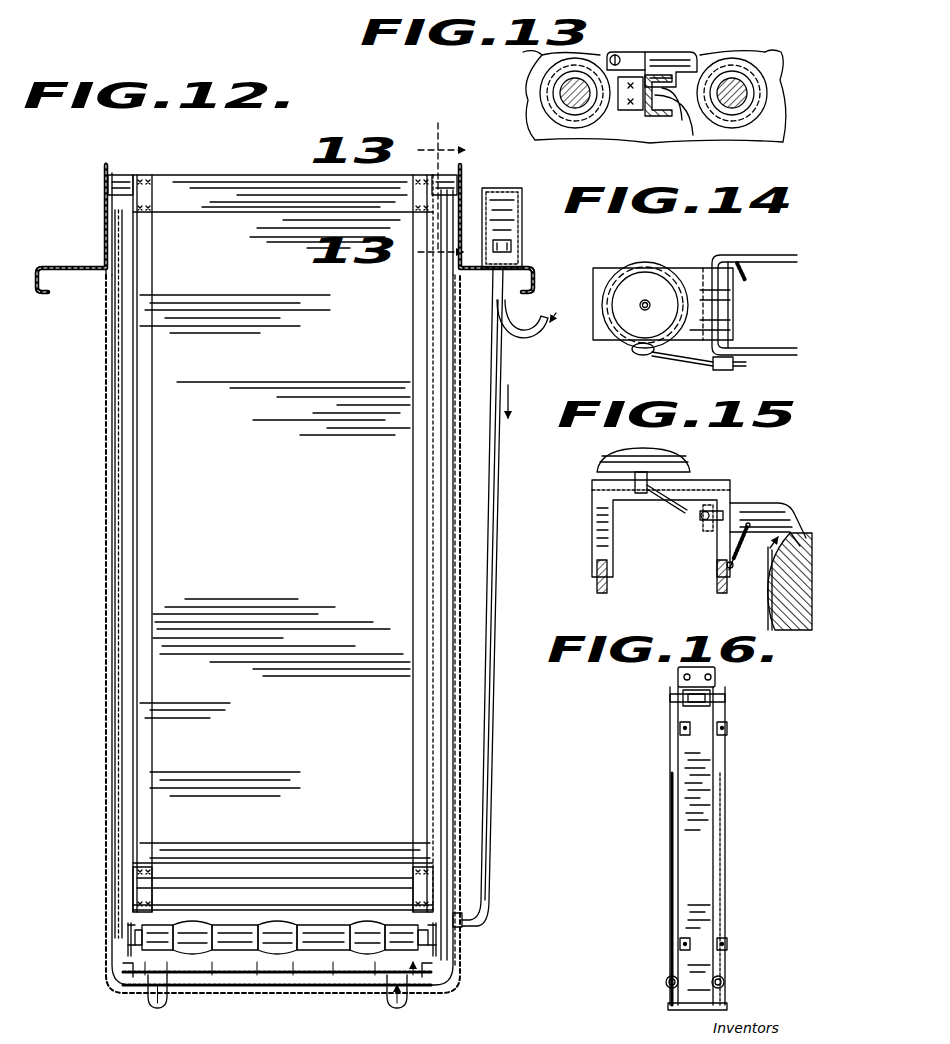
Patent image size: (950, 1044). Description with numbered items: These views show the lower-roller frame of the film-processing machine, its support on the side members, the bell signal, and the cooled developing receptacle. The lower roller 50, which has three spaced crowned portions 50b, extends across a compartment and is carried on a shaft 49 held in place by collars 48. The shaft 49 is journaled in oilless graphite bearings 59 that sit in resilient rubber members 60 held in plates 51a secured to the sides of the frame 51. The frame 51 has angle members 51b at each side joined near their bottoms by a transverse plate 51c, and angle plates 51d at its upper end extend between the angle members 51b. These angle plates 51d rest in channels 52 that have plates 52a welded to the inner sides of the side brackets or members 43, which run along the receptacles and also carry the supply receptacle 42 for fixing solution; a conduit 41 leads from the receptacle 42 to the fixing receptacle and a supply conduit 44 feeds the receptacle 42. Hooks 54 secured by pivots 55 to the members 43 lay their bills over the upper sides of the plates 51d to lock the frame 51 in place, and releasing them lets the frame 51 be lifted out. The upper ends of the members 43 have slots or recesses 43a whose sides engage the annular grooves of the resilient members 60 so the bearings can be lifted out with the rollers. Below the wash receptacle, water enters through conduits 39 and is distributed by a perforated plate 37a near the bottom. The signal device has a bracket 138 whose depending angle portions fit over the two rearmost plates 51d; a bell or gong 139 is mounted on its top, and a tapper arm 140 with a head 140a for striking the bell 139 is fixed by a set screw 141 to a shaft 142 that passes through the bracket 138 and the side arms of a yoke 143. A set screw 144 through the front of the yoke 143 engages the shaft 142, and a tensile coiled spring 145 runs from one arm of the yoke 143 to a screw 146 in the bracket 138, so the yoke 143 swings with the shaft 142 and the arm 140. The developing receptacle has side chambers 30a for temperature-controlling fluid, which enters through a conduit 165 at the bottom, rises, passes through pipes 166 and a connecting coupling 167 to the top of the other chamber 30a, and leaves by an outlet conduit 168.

In FIG. 12, the brackets or members 43 is at (106, 230).
In FIG. 15, the brackets or members 43 is at (603, 583).
In FIG. 12, the angle plates 51d is at (218, 207).
In FIG. 13, the angle plates 51d is at (667, 100).
In FIG. 12, the angle members 51b is at (148, 574).
In FIG. 12, the frames 51 is at (420, 664).
In FIG. 12, the receptacle 42 is at (506, 194).
In FIG. 12, the conduit 41 is at (488, 822).
In FIG. 12, the supply conduit 44 is at (530, 336).
In FIG. 12, the collars 48 is at (142, 926).
In FIG. 12, the transverse plates 51c is at (375, 877).
In FIG. 12, the lower roller 50 is at (250, 954).
In FIG. 12, the crowned portions 50b is at (365, 925).
In FIG. 12, the bearings 59 is at (123, 933).
In FIG. 12, the plates 51a is at (127, 921).
In FIG. 12, the shafts 49 is at (127, 954).
In FIG. 12, the perforated plate 37a is at (315, 976).
In FIG. 12, the conduits 39 is at (165, 1003).
In FIG. 13, the slots or recesses 43a is at (722, 58).
In FIG. 13, the resilient members 60 is at (572, 126).
In FIG. 13, the plates 52a is at (624, 108).
In FIG. 13, the channels 52 is at (650, 112).
In FIG. 13, the hooks 54 is at (662, 60).
In FIG. 13, the pivots 55 is at (616, 55).
In FIG. 14, the bracket 138 is at (690, 276).
In FIG. 15, the bracket 138 is at (706, 486).
In FIG. 14, the bell or gong 139 is at (645, 300).
In FIG. 15, the bell or gong 139 is at (675, 464).
In FIG. 14, the yoke 143 is at (758, 348).
In FIG. 15, the yoke 143 is at (755, 505).
In FIG. 14, the tensile coiled spring 145 is at (742, 272).
In FIG. 15, the tensile coiled spring 145 is at (742, 562).
In FIG. 14, the head 140a is at (640, 354).
In FIG. 15, the head 140a is at (635, 487).
In FIG. 14, the tapper arm 140 is at (685, 358).
In FIG. 14, the shaft 142 is at (723, 370).
In FIG. 15, the shaft 142 is at (707, 531).
In FIG. 14, the set screw 141 is at (748, 365).
In FIG. 15, the set screw 144 is at (700, 516).
In FIG. 15, the screw 146 is at (730, 570).
In FIG. 16, the chambers 30a is at (670, 805).
In FIG. 16, the pipes 166 is at (670, 698).
In FIG. 16, the connecting coupling 167 is at (700, 706).
In FIG. 16, the outlet conduit 168 is at (668, 976).
In FIG. 16, the conduit 165 is at (725, 981).